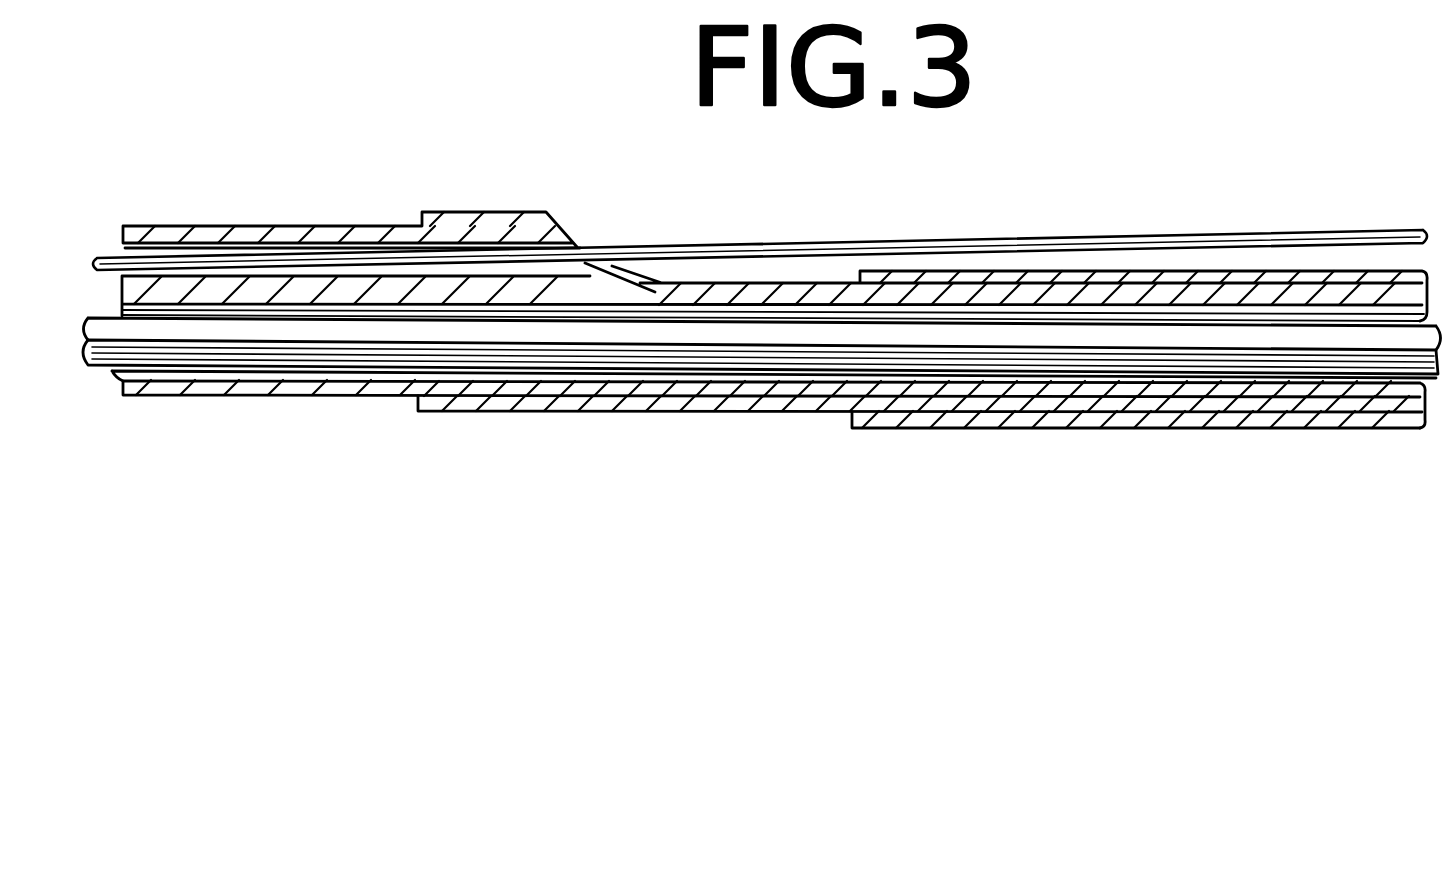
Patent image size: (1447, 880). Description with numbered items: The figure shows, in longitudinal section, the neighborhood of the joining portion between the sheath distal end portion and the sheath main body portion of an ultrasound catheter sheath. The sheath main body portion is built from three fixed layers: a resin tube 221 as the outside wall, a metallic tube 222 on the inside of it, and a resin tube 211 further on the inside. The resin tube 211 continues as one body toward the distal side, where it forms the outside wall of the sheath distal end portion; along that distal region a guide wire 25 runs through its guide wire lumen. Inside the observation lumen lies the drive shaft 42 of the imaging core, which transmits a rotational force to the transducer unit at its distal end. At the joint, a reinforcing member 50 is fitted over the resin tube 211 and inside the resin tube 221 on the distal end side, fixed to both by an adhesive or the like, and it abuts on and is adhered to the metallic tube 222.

The resin tube 211 is at (270, 230).
The resin tube 221 is at (1102, 418).
The metallic tube 222 is at (1252, 417).
The guide wire 25 is at (1375, 228).
The drive shaft 42 is at (278, 337).
The reinforcing member 50 is at (668, 402).